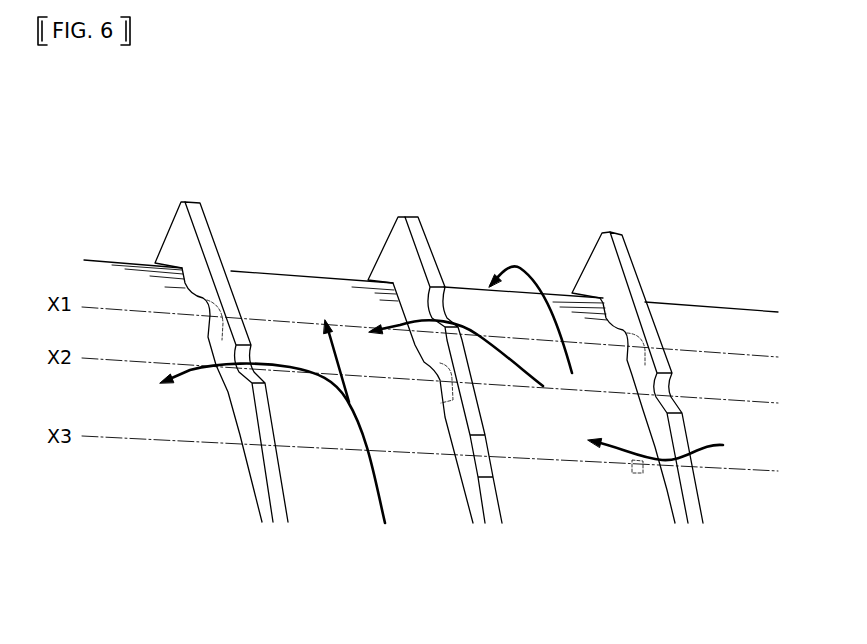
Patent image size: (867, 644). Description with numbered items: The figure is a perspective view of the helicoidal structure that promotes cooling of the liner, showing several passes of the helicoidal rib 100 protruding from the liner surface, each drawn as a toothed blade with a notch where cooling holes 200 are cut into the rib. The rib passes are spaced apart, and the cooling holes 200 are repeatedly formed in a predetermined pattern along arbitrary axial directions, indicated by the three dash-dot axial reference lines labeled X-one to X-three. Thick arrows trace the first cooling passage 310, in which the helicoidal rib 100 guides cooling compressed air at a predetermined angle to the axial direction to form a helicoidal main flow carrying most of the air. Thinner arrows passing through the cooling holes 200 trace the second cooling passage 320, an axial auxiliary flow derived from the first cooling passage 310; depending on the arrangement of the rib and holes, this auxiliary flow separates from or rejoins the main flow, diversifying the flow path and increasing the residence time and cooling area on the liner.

The helicoidal rib 100 is at (394, 246).
The cooling holes 200 is at (262, 365).
The first cooling passage 310 is at (542, 287).
The second cooling passage 320 is at (300, 370).